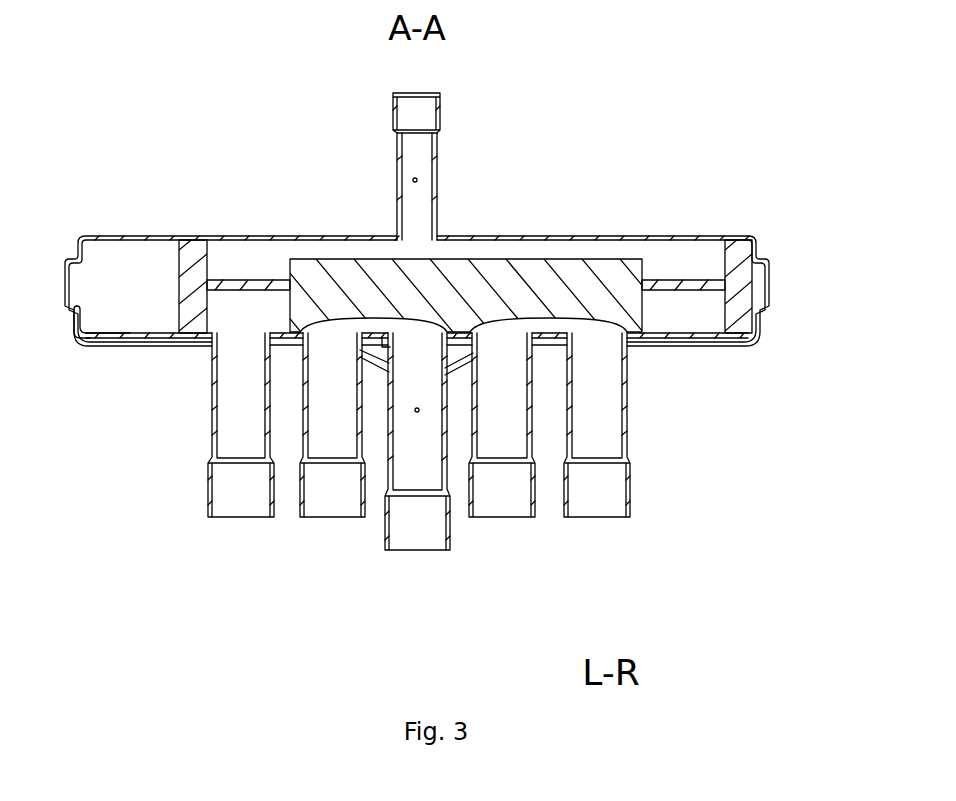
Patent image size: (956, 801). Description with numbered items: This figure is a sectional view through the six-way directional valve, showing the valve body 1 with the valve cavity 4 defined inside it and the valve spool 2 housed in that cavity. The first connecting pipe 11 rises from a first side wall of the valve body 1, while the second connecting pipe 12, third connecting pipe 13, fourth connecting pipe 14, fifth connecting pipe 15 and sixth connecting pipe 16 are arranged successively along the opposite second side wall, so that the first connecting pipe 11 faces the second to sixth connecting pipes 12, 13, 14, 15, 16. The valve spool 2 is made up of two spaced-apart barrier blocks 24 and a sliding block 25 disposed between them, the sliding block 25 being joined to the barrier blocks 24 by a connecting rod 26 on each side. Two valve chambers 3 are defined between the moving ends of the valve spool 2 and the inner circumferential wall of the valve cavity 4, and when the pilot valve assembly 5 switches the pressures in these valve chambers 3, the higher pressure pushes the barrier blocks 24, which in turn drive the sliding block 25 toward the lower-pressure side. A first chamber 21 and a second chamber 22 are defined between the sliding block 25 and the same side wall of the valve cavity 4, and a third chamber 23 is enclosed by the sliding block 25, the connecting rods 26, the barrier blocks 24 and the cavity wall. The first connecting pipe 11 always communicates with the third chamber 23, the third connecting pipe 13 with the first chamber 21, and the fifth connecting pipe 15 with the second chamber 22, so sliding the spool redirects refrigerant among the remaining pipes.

The valve body 1 is at (121, 236).
The valve spool 2 is at (128, 113).
The valve chamber 3 is at (113, 320).
The valve cavity 4 is at (687, 310).
The pilot valve assembly 5 is at (73, 322).
The first connecting pipe 11 is at (420, 213).
The second connecting pipe 12 is at (250, 490).
The third connecting pipe 13 is at (337, 497).
The fourth connecting pipe 14 is at (420, 512).
The fifth connecting pipe 15 is at (510, 488).
The sixth connecting pipe 16 is at (603, 492).
The first chamber 21 is at (350, 325).
The second chamber 22 is at (567, 327).
The third chamber 23 is at (579, 252).
The barrier block 24 is at (198, 288).
The sliding block 25 is at (332, 283).
The connecting rod 26 is at (249, 284).